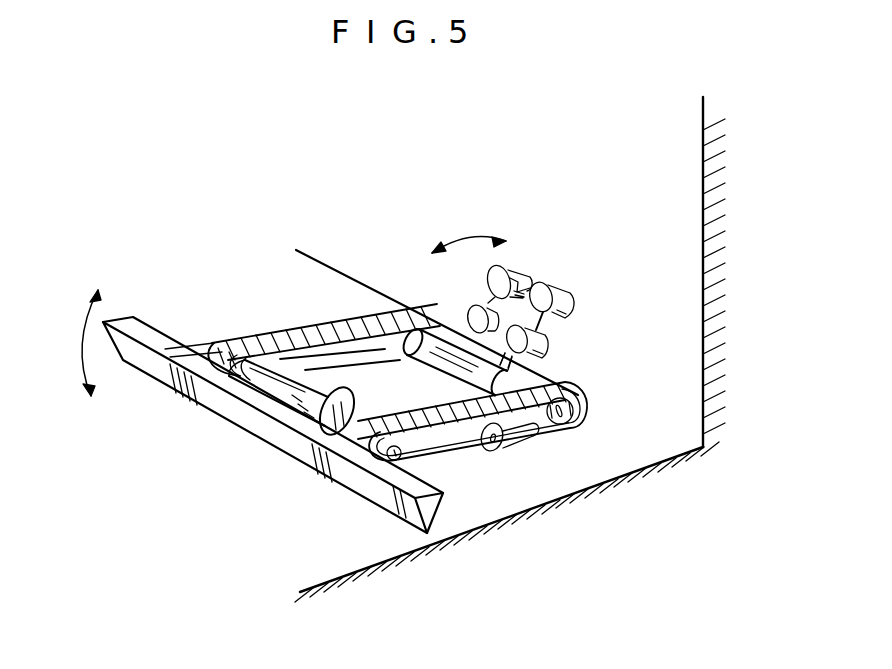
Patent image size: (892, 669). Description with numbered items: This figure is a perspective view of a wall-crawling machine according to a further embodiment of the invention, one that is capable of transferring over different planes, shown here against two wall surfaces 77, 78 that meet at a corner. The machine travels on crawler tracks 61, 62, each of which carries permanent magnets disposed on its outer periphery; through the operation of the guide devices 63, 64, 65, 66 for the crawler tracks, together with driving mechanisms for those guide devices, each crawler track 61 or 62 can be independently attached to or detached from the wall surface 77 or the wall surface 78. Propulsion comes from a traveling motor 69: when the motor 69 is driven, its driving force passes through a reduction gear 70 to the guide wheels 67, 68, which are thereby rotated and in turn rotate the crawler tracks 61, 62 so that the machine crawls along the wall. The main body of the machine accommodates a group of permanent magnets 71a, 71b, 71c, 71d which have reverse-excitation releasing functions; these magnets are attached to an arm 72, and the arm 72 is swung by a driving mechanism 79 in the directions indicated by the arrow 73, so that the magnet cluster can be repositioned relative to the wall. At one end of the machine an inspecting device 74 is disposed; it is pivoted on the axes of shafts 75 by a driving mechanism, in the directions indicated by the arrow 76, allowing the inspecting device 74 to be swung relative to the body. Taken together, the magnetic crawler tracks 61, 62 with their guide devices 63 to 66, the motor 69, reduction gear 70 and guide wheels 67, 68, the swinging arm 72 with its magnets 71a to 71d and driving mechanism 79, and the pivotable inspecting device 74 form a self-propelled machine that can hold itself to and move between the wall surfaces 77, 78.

The crawler track 61 is at (427, 383).
The crawler track 62 is at (557, 381).
The guide device 63 is at (262, 368).
The guide device 64 is at (300, 318).
The guide device 65 is at (517, 440).
The guide device 66 is at (530, 442).
The guide wheel 67 is at (437, 456).
The guide wheel 68 is at (587, 438).
The traveling motor 69 is at (303, 396).
The reduction gear 70 is at (232, 346).
The permanent magnet 71a is at (503, 277).
The permanent magnet 71b is at (470, 322).
The permanent magnet 71c is at (550, 342).
The permanent magnet 71d is at (560, 293).
The arm 72 is at (533, 283).
The arrow 73 is at (460, 242).
The inspecting device 74 is at (132, 330).
The shaft 75 is at (495, 451).
The arrow 76 is at (82, 325).
The wall surface 77 is at (348, 574).
The wall surface 78 is at (705, 214).
The driving mechanism 79 is at (437, 337).